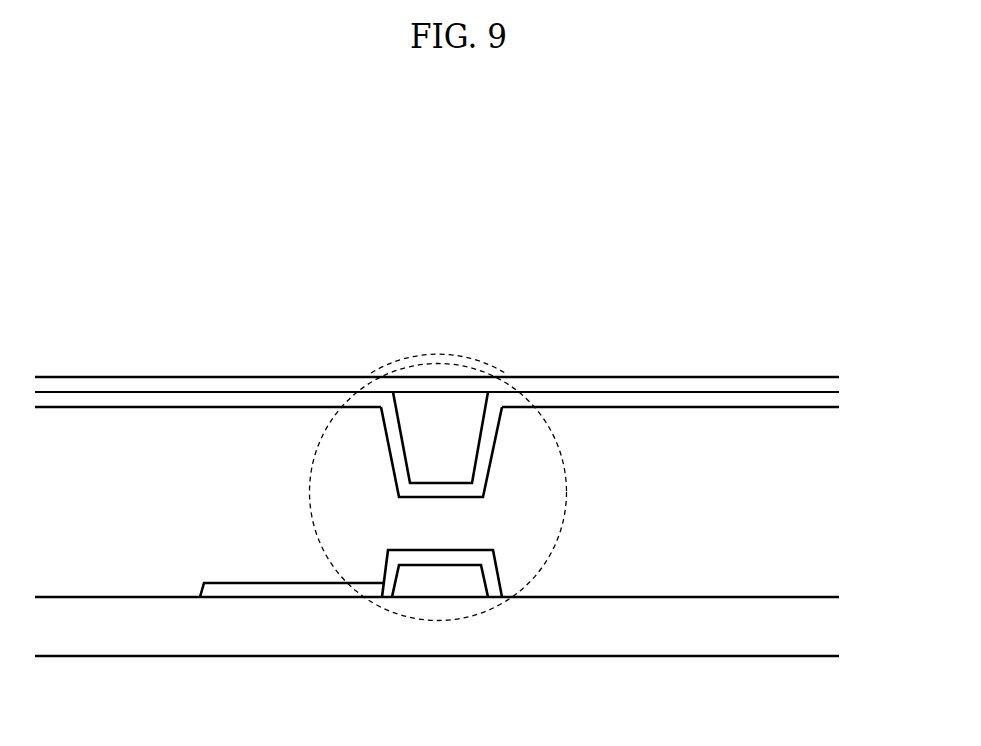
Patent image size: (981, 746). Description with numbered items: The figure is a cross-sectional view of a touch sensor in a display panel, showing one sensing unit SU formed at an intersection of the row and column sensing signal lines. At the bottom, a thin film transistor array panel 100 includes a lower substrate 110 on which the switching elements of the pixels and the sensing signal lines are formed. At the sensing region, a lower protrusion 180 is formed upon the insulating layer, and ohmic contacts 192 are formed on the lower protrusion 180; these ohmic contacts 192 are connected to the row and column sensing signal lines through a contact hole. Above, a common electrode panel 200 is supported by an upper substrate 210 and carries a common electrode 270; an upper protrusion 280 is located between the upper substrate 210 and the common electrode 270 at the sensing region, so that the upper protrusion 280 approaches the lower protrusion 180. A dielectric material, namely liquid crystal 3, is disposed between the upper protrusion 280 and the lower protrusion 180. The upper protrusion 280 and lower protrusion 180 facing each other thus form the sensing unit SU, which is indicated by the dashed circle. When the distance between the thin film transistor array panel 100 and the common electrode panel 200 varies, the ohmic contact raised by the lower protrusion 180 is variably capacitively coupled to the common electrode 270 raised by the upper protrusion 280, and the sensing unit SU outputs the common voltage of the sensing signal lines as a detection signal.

The liquid crystal 3 is at (812, 500).
The thin film transistor array panel 100 is at (467, 638).
The lower substrate 110 is at (130, 647).
The ohmic contacts 192 is at (313, 588).
The lower protrusion 180 is at (393, 583).
The common electrode panel 200 is at (466, 397).
The upper substrate 210 is at (694, 386).
The common electrode 270 is at (583, 397).
The upper protrusion 280 is at (481, 424).
The sensing unit SU is at (416, 365).